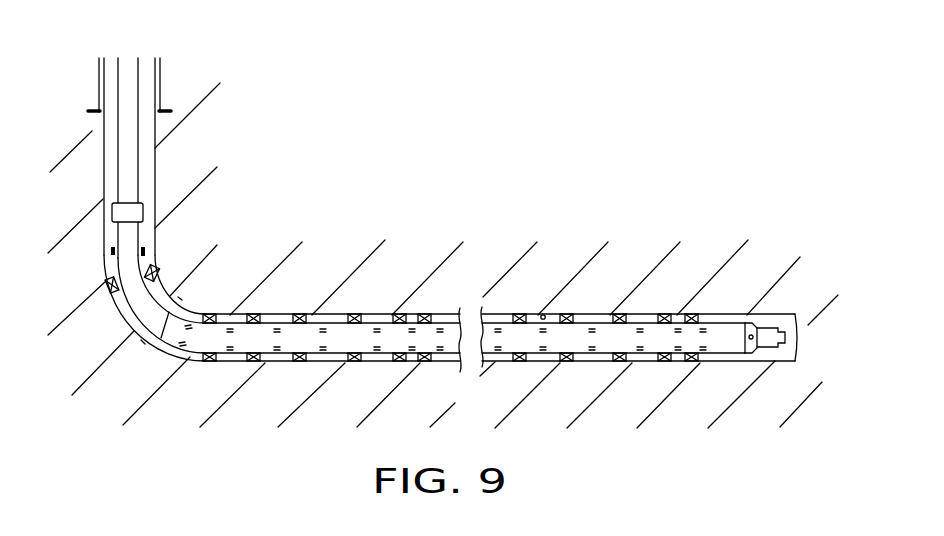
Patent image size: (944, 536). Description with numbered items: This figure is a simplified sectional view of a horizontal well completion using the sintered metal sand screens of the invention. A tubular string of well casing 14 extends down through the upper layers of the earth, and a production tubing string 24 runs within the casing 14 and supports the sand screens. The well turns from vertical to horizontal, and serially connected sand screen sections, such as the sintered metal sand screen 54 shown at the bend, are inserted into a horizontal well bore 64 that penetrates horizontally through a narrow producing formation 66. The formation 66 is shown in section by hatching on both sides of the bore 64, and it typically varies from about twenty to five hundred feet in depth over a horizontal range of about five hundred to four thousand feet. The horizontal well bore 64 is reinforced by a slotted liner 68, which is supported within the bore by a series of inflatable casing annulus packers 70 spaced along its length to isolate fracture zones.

The well casing 14 is at (98, 87).
The production tubing string 24 is at (133, 139).
The sintered metal sand screen 54 is at (150, 296).
The horizontal well bore 64 is at (543, 314).
The producing formation 66 is at (427, 247).
The slotted liner 68 is at (730, 333).
The inflatable casing annulus packers 70 is at (300, 313).